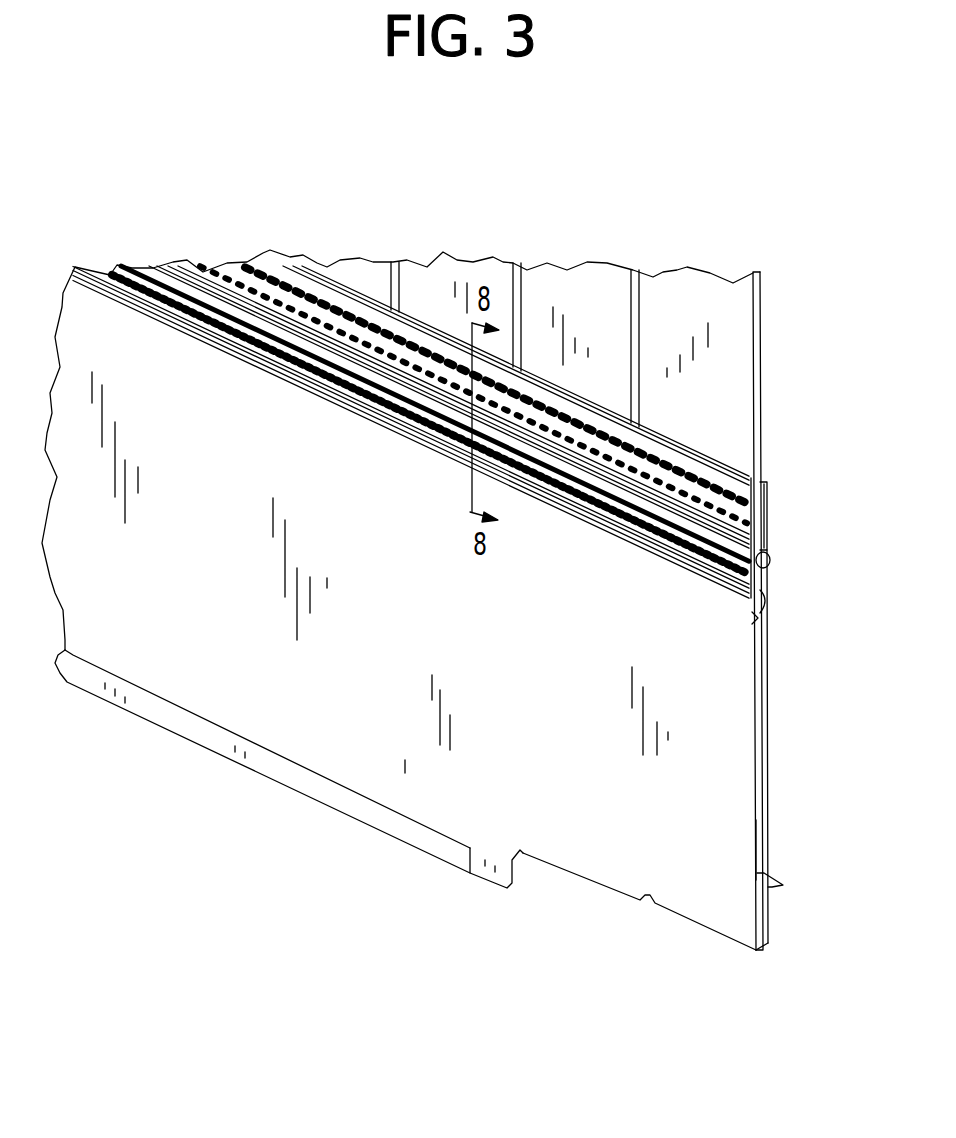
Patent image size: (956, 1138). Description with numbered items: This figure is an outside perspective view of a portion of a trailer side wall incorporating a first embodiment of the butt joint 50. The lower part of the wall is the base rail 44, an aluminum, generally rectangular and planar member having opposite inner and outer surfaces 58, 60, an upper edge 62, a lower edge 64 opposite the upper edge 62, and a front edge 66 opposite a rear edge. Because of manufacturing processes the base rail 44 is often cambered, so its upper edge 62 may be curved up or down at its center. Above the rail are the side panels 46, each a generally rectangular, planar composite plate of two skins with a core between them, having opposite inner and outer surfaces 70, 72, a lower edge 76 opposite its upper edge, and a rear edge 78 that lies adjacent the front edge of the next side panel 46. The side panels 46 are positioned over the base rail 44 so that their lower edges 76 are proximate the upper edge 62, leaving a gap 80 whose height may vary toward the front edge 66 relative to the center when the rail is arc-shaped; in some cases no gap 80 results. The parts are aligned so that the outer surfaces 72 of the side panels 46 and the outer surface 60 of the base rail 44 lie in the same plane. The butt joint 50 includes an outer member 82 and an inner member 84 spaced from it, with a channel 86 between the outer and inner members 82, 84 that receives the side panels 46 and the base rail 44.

The base rail 44 is at (340, 712).
The side panel 46 is at (592, 317).
The butt joint 50 is at (632, 455).
The inner surface of base rail 58 is at (768, 840).
The outer surface of base rail 60 is at (180, 600).
The upper edge of base rail 62 is at (770, 568).
The lower edge of base rail 64 is at (470, 858).
The front edge of base rail 66 is at (757, 820).
The inner surface of side panel 70 is at (763, 420).
The outer surface of side panel 72 is at (716, 425).
The lower edge of side panel 76 is at (777, 550).
The rear edge of side panel 78 is at (758, 349).
The gap 80 is at (773, 557).
The outer member 82 is at (420, 412).
The inner member 84 is at (770, 498).
The channel 86 is at (750, 619).